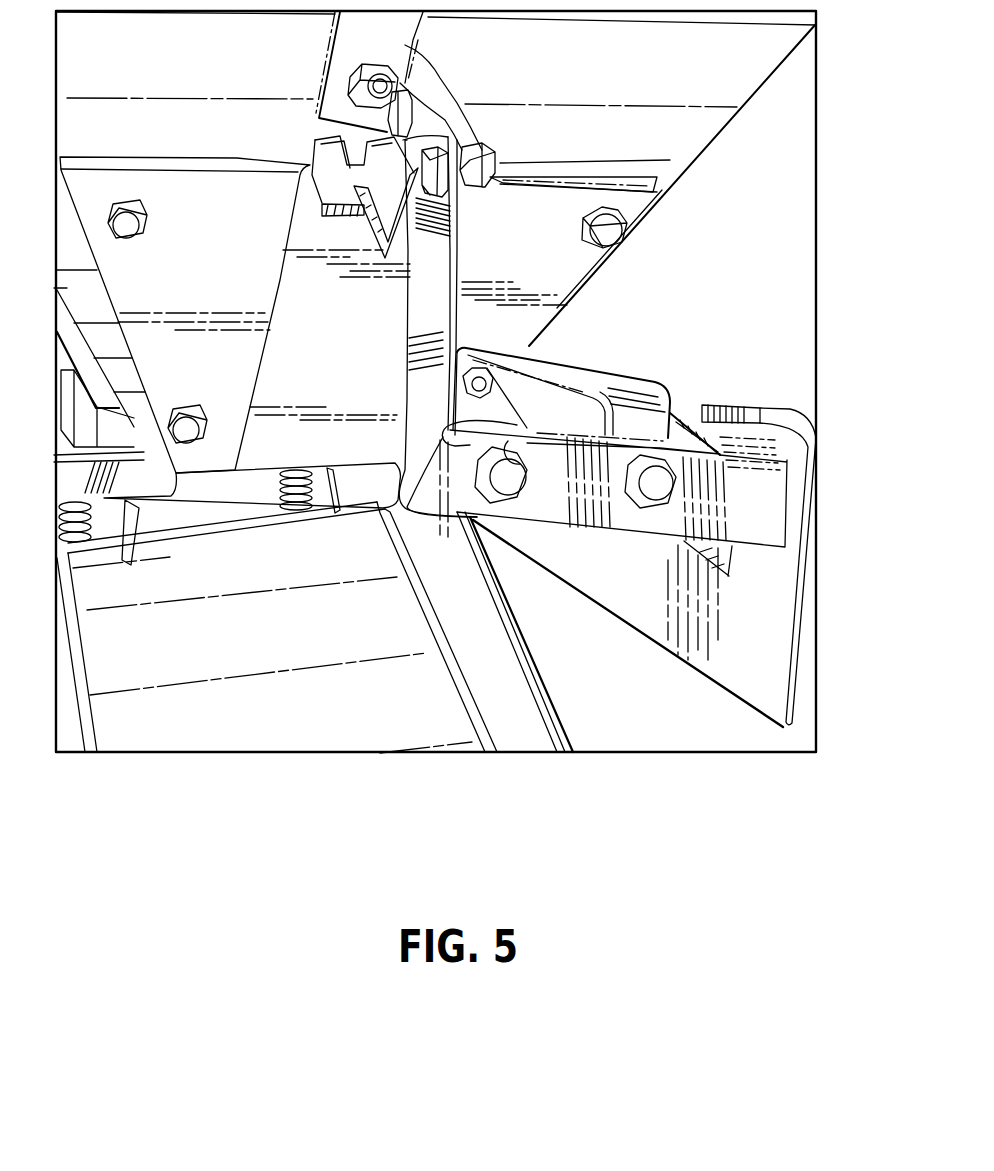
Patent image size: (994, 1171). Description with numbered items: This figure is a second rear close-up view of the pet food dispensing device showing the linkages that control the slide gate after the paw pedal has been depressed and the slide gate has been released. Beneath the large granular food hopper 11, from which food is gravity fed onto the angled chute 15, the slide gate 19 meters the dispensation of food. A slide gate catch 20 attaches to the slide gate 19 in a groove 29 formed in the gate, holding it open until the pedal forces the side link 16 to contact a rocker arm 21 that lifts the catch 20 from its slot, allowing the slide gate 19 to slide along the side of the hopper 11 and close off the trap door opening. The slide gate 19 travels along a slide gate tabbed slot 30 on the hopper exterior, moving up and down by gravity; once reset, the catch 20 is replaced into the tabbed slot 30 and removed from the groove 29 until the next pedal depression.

The hopper 11 is at (690, 137).
The chute 15 is at (482, 688).
The side link 16 is at (783, 628).
The slide gate 19 is at (307, 387).
The slide gate catch 20 is at (443, 207).
The rocker arm 21 is at (607, 467).
The groove 29 is at (337, 217).
The slide gate tabbed slot 30 is at (510, 175).